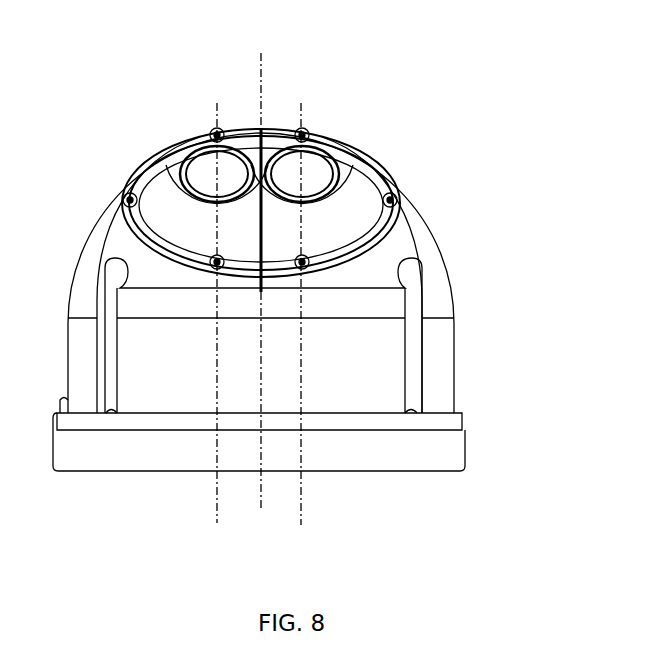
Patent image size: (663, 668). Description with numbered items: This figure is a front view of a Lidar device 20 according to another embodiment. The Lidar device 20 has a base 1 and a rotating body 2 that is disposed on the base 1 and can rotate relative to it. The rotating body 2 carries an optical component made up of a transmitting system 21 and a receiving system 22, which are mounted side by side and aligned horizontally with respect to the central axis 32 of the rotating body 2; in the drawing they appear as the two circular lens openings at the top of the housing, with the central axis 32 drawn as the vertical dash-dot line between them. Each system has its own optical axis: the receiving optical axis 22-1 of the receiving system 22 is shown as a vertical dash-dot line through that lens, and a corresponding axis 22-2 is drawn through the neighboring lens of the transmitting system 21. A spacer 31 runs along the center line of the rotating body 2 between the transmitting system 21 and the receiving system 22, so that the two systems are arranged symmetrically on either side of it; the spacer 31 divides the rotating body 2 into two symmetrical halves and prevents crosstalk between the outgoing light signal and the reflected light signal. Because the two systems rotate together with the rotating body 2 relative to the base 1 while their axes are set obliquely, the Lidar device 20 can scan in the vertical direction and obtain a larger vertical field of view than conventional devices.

The base 1 is at (365, 457).
The rotating body 2 is at (428, 202).
The Lidar device 20 is at (310, 263).
The transmitting system 21 is at (310, 172).
The receiving system 22 is at (205, 172).
The spacer 31 is at (261, 125).
The central axis 32 is at (262, 60).
The receiving optical axis 22-1 is at (213, 328).
The second lens optical axis 22-2 is at (313, 328).